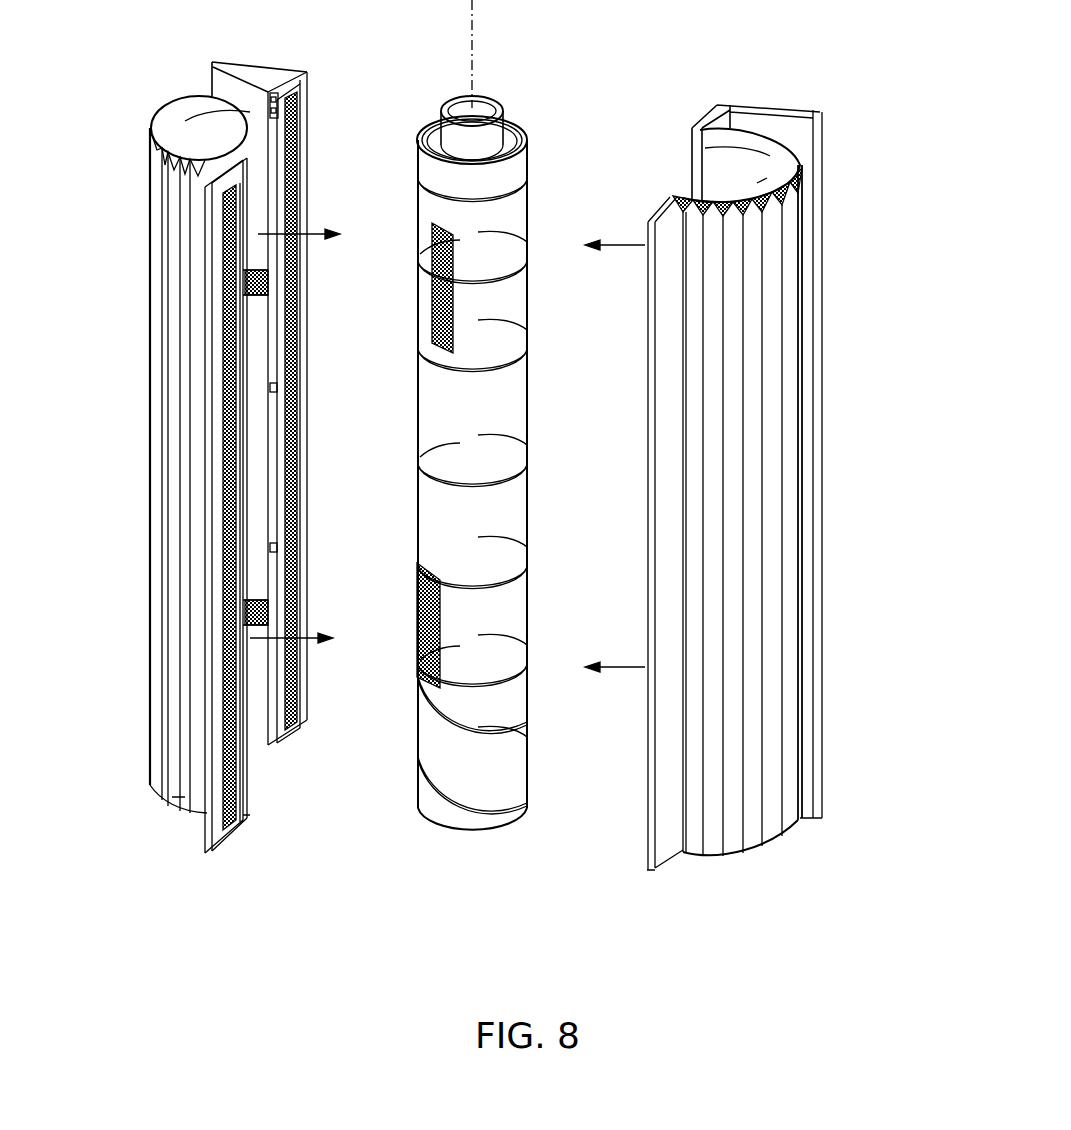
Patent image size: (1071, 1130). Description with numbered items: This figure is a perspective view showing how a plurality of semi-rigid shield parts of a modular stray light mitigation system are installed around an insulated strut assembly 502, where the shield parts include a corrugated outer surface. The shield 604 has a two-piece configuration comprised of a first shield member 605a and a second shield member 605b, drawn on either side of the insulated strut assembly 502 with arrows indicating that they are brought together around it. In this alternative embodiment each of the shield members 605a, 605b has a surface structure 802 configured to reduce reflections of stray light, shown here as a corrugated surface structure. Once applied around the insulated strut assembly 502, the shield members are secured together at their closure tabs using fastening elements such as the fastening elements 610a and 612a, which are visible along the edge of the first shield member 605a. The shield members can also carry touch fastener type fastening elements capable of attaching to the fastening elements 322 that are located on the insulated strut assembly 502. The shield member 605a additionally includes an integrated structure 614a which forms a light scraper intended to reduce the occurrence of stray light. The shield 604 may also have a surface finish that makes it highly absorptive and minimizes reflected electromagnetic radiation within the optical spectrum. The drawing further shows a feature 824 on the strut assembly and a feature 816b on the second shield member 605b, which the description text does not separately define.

The insulated strut assembly 502 is at (452, 68).
The helical retaining bands 824 is at (548, 205).
The fastening elements 322 is at (432, 316).
The surface structure 802 is at (126, 549).
The shield 604 is at (122, 812).
The first shield member 605a is at (150, 128).
The second shield member 605b is at (818, 217).
The fastening element 610a is at (232, 777).
The fastening element 612a is at (297, 452).
The integrated structure 614a is at (212, 62).
The rear mounting plate 816b is at (690, 155).